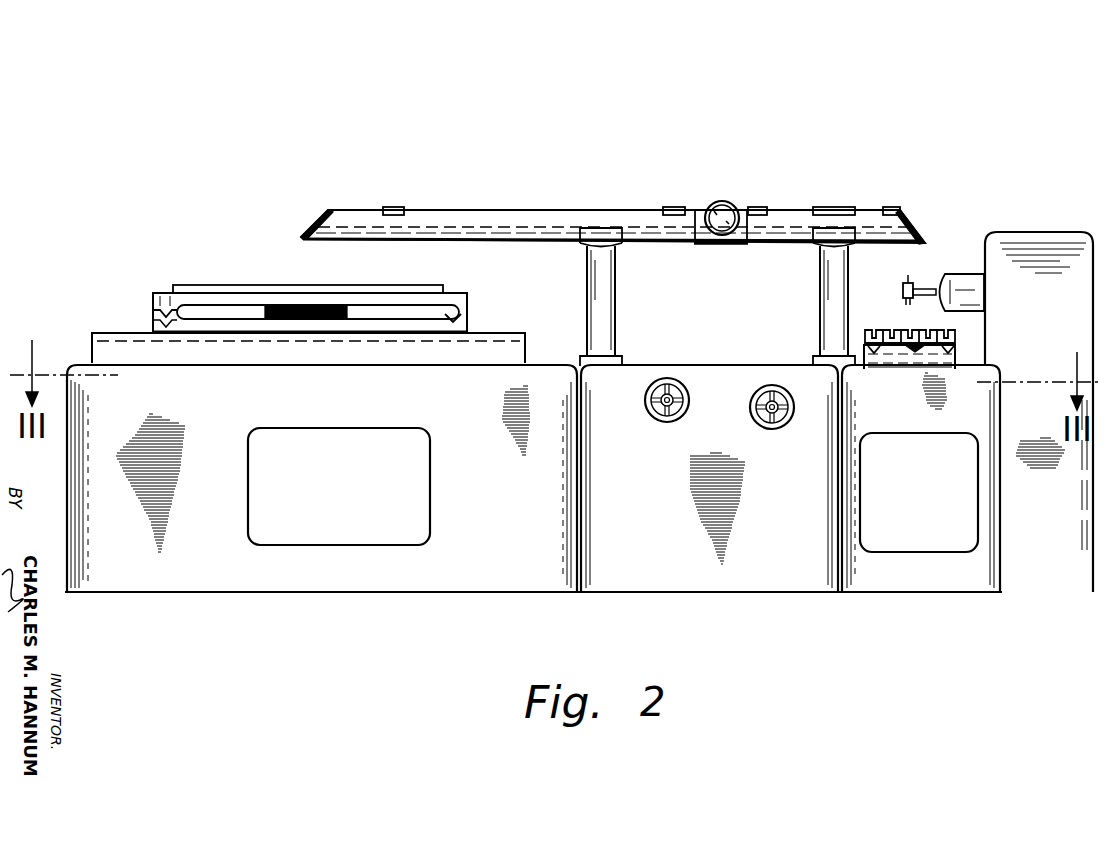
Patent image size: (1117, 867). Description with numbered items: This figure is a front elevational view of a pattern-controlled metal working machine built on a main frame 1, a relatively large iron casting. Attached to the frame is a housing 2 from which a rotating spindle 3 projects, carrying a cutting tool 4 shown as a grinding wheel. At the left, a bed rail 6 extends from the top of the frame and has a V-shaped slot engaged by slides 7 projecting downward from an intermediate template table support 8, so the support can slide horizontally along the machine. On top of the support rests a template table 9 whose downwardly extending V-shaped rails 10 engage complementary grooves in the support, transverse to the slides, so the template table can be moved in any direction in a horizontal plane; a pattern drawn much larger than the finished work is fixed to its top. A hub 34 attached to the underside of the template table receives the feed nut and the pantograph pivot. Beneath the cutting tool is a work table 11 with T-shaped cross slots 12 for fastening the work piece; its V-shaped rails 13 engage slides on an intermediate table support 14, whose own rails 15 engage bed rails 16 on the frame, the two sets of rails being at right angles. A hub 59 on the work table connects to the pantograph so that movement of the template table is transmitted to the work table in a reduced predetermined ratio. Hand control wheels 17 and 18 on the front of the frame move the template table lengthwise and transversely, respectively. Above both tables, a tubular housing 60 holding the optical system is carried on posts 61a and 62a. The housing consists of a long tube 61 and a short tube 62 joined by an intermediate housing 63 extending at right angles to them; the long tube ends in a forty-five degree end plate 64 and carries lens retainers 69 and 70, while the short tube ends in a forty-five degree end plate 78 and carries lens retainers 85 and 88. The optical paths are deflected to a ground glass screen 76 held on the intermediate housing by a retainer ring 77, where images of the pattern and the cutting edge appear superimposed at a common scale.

The main frame 1 is at (410, 593).
The housing 2 is at (1052, 240).
The rotating spindle 3 is at (935, 288).
The cutting tool 4 is at (910, 280).
The bed rail 6 is at (518, 352).
The slides 7 is at (160, 327).
The intermediate template table support 8 is at (468, 320).
The template table 9 is at (190, 286).
The V-shaped rails 10 is at (163, 296).
The work table 11 is at (868, 330).
The T-shaped cross slots 12 is at (890, 330).
The V-shaped rails 13 is at (865, 346).
The intermediate table support 14 is at (870, 362).
The rails 15 is at (880, 370).
The bed rails 16 is at (958, 372).
The hand control wheel 17 is at (655, 420).
The hand control wheel 18 is at (778, 428).
The hub 34 is at (300, 305).
The hub 59 is at (917, 366).
The tubular housing 60 is at (546, 200).
The long tube 61 is at (455, 223).
The post 61a is at (616, 323).
The short tube 62 is at (790, 220).
The post 62a is at (822, 250).
The intermediate housing 63 is at (700, 211).
The end plate 64 is at (312, 232).
The retainer 69 is at (392, 207).
The retainer 70 is at (666, 208).
The ground glass screen 76 is at (717, 201).
The retainer ring 77 is at (733, 204).
The end plate 78 is at (907, 240).
The retainer 85 is at (888, 208).
The retainer 88 is at (760, 206).